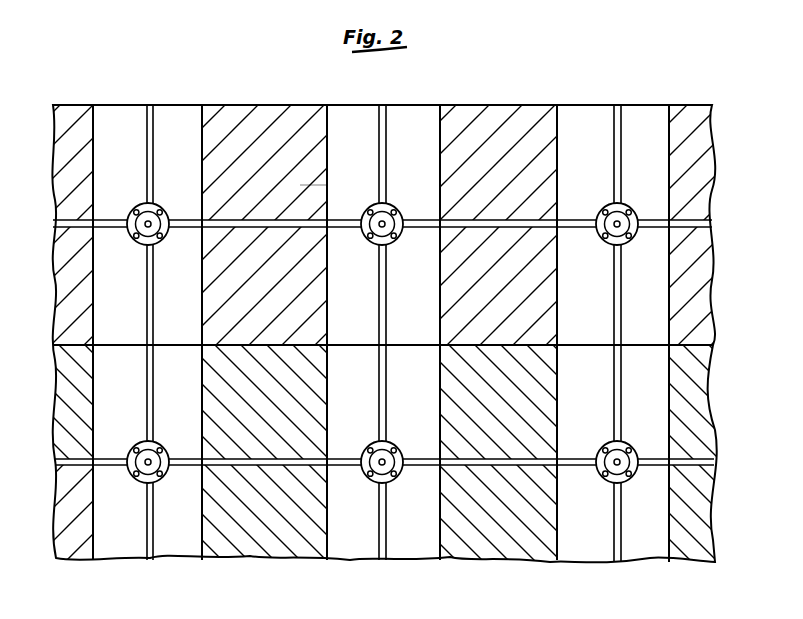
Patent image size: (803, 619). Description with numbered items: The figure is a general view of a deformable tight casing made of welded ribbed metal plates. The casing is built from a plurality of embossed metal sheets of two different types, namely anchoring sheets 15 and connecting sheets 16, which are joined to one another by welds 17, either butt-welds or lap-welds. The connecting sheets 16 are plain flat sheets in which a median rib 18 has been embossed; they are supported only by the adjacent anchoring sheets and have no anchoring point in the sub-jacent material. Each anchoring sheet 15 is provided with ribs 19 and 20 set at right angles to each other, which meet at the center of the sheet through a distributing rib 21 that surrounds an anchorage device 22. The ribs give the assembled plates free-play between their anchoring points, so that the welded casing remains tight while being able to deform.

The anchoring sheet 15 is at (138, 112).
The connecting sheet 16 is at (74, 106).
The weld 17 is at (118, 348).
The median rib 18 is at (300, 191).
The rib 19 is at (117, 219).
The rib 20 is at (154, 165).
The distributing rib 21 is at (156, 247).
The anchorage device 22 is at (150, 223).